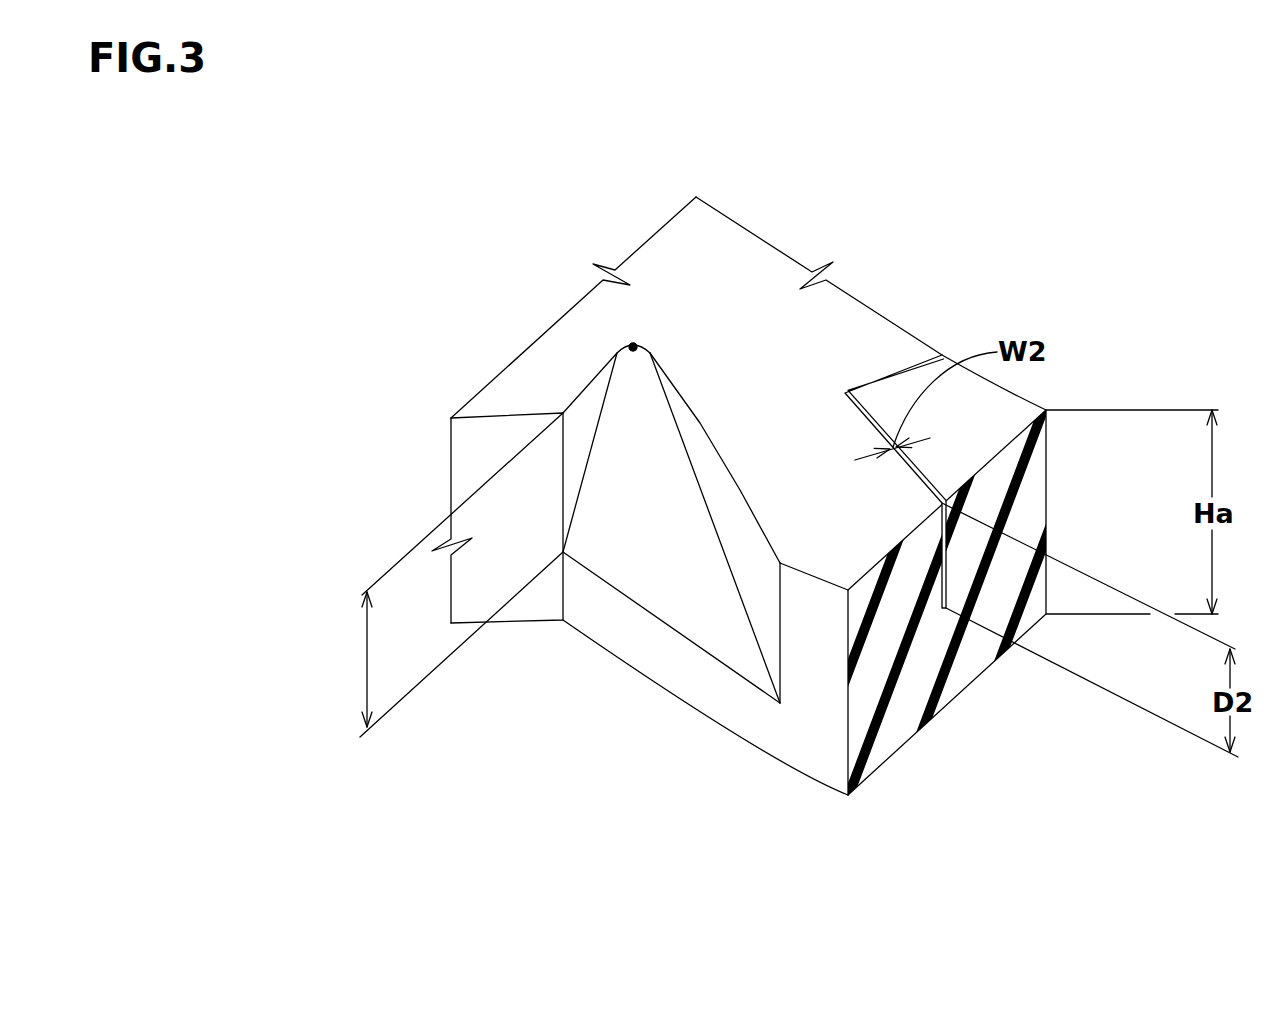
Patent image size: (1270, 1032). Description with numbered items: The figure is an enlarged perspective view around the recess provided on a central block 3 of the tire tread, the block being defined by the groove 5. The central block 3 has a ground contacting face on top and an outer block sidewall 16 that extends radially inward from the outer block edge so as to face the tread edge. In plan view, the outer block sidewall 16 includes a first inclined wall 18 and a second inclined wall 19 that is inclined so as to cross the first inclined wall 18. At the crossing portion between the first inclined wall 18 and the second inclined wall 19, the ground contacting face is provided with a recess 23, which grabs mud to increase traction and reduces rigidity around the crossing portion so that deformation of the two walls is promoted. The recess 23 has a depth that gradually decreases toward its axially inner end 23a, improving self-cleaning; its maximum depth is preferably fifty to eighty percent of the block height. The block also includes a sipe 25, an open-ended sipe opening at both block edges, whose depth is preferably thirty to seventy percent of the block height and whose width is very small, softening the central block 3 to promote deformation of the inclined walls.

The central block 3 is at (738, 268).
The groove 5 is at (514, 702).
The outer block sidewall 16 is at (812, 737).
The first inclined wall 18 is at (485, 448).
The second inclined wall 19 is at (675, 663).
The recess 23 is at (643, 547).
The axially inner end 23a is at (633, 344).
The sipe 25 is at (906, 363).